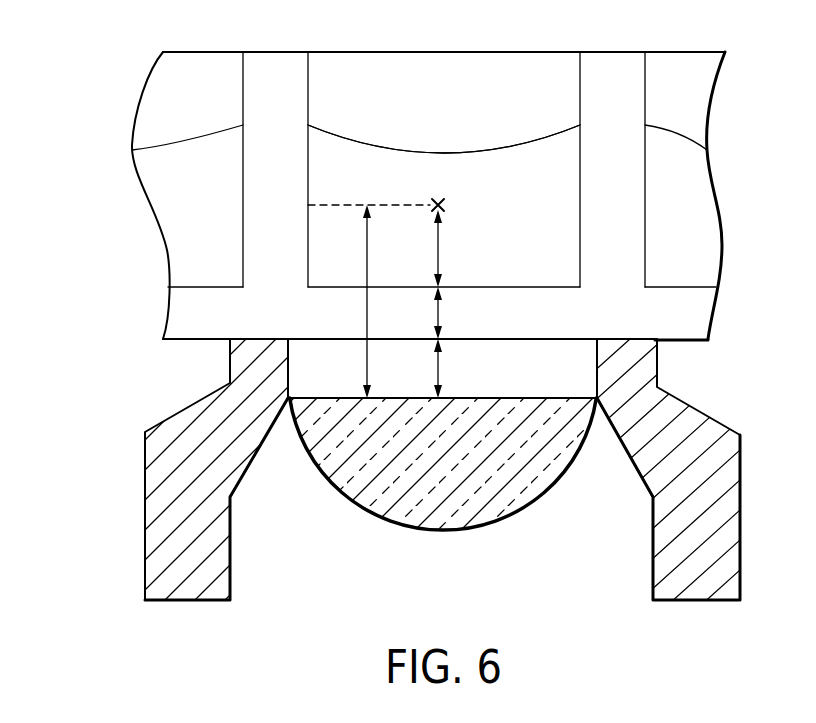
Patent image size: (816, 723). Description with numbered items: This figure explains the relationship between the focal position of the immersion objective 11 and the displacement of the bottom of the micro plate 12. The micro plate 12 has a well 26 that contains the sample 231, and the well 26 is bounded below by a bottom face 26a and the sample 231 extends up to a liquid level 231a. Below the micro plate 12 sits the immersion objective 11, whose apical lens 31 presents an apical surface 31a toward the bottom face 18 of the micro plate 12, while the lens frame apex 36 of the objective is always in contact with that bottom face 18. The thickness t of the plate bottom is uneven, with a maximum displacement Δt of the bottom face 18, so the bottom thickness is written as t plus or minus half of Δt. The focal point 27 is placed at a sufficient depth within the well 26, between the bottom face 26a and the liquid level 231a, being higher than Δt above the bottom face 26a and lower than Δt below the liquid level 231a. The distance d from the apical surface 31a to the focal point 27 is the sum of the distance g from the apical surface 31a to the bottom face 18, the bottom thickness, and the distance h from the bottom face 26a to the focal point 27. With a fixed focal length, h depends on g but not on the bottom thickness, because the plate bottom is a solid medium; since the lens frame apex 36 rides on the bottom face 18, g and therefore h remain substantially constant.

The immersion objective 11 is at (396, 363).
The micro plate 12 is at (608, 52).
The bottom face 18 is at (175, 340).
The well 26 is at (536, 52).
The bottom face of the well 26a is at (541, 287).
The focal point 27 is at (448, 205).
The apical lens 31 is at (517, 513).
The apical surface 31a is at (551, 398).
The lens frame apex 36 is at (606, 339).
The sample 231 is at (342, 151).
The liquid level 231a is at (503, 146).